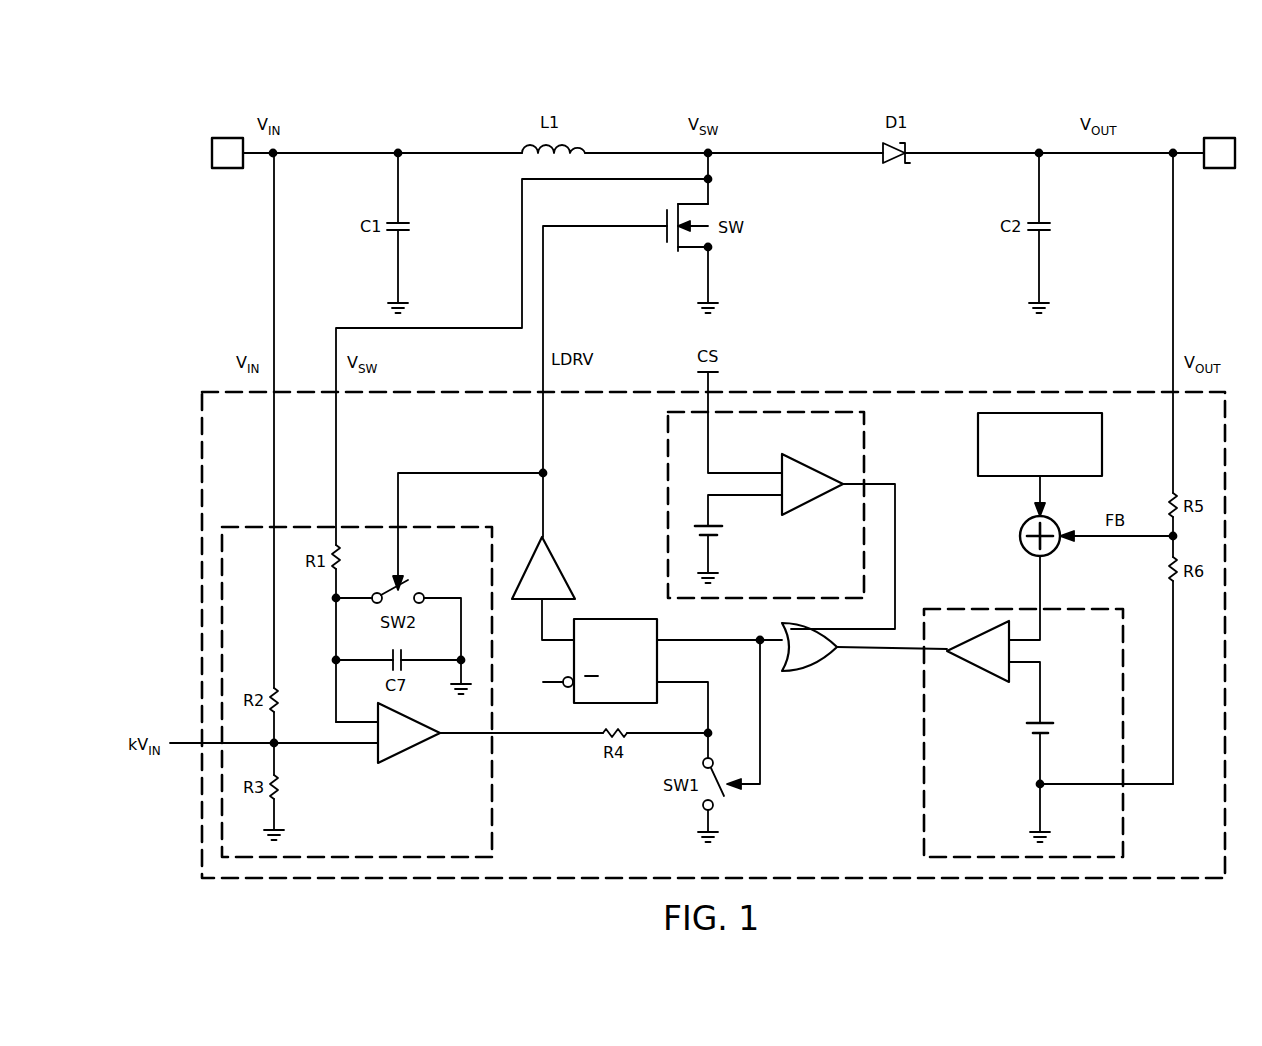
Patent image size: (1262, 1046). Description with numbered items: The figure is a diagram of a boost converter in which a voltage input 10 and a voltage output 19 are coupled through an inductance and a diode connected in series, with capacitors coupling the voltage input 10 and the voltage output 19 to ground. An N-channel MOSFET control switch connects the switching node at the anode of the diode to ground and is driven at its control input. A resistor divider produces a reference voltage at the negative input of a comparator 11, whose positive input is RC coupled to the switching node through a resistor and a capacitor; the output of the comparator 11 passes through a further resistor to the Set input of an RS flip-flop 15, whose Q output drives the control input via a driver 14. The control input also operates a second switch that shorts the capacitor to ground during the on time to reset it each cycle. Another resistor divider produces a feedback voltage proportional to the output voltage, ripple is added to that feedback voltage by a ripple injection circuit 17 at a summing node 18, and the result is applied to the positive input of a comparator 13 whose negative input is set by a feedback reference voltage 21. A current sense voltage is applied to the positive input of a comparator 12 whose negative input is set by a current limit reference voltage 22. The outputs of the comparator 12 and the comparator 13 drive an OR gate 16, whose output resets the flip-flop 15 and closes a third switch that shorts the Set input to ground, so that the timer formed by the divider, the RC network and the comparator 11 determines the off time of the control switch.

The voltage input 10 is at (226, 138).
The voltage output 19 is at (1220, 138).
The comparator 11 is at (412, 752).
The comparator 12 is at (812, 468).
The comparator 13 is at (978, 670).
The driver 14 is at (562, 568).
The RS flip-flop 15 is at (617, 619).
The OR gate 16 is at (812, 668).
The ripple injection 17 is at (1102, 446).
The summing node 18 is at (1050, 553).
The feedback reference voltage 21 is at (1052, 728).
The current limit reference voltage 22 is at (722, 530).